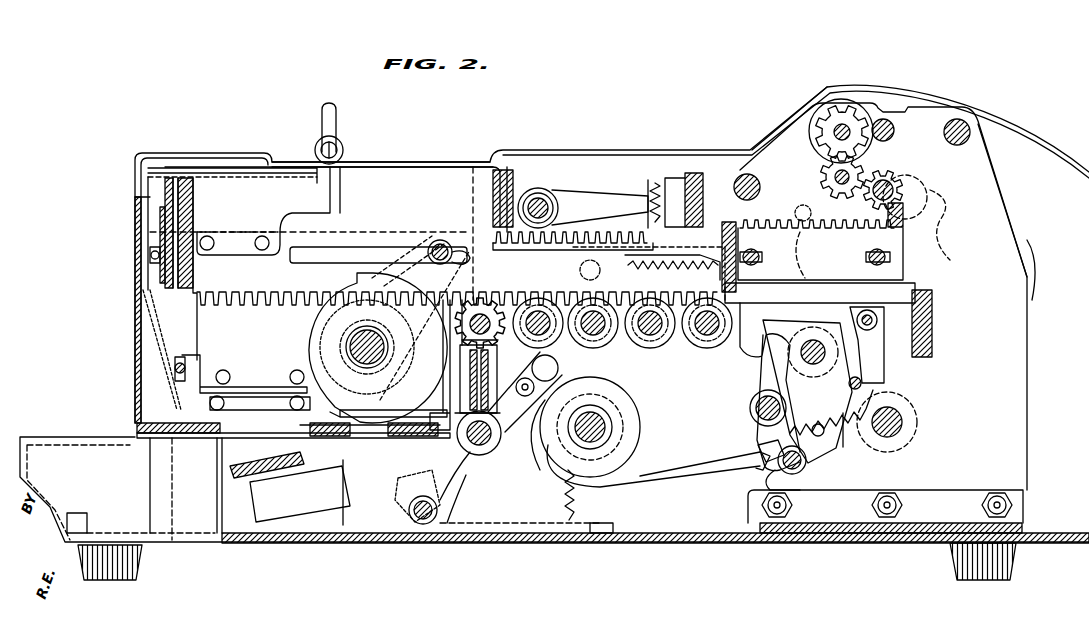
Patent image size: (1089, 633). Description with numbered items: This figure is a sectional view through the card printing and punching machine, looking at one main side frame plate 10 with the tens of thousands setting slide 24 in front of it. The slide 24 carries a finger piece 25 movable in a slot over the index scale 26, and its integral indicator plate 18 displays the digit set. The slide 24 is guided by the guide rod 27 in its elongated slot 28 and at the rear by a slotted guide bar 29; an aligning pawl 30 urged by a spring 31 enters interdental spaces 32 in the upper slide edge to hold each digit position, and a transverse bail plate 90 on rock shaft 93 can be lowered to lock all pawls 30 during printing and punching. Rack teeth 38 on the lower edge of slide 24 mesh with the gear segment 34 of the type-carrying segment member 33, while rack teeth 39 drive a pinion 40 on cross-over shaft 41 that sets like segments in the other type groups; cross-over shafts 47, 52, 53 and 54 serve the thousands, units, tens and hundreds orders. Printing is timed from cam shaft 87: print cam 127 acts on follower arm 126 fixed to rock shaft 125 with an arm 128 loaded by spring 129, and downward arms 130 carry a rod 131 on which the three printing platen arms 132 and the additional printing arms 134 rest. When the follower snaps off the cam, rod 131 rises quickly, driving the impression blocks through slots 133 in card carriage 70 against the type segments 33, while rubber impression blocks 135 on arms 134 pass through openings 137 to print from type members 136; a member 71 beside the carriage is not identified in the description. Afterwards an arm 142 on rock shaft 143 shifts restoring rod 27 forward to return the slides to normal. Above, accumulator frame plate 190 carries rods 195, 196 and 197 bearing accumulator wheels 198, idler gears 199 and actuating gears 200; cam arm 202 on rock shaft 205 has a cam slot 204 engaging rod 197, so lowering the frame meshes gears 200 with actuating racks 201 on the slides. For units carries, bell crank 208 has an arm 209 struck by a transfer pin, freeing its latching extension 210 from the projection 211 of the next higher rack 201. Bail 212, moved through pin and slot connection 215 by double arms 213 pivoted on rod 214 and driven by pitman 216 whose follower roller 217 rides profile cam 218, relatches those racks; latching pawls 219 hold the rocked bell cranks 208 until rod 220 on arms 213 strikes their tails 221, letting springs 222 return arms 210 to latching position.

The main side frame plate 10 is at (328, 298).
The indicator plate 18 is at (155, 175).
The manually settable slide 24 is at (268, 222).
The finger piece 25 is at (338, 116).
The index scale 26 is at (420, 164).
The guide rod 27 is at (446, 244).
The elongated slot 28 is at (355, 245).
The slotted guide bar 29 is at (934, 330).
The aligning pawl 30 is at (577, 203).
The spring 31 is at (670, 178).
The interdental spaces 32 is at (565, 241).
The segment member 33 is at (356, 281).
The gear segment 34 is at (317, 340).
The rack teeth 38 is at (262, 305).
The rack teeth 39 is at (470, 300).
The pinion 40 is at (460, 340).
The cross-over shaft 41 is at (494, 338).
The cross-over shaft 47 is at (710, 335).
The cross-over shaft 52 is at (655, 334).
The cross-over shaft 53 is at (548, 330).
The cross-over shaft 54 is at (602, 331).
The card carriage 70 is at (196, 437).
The base support 71 is at (135, 428).
The cam shaft 87 is at (606, 427).
The bail plate 90 is at (650, 182).
The rock shaft 93 is at (538, 196).
The rock shaft 125 is at (478, 456).
The follower arm 126 is at (532, 368).
The print cam 127 is at (640, 412).
The arm 128 is at (590, 420).
The spring 129 is at (567, 512).
The extending arms 130 is at (450, 528).
The rod 131 is at (418, 520).
The printing platen arms 132 is at (400, 490).
The slots 133 is at (372, 412).
The additional printing arms 134 is at (315, 492).
The rubber impression blocks 135 is at (262, 462).
The type members 136 is at (262, 395).
The additional openings 137 is at (230, 440).
The arm 142 is at (405, 250).
The rock shaft 143 is at (380, 338).
The frame plate 190 is at (765, 160).
The rod 195 is at (835, 125).
The rod 196 is at (822, 172).
The rod 197 is at (900, 180).
The accumulator wheels 198 is at (848, 112).
The idler gears 199 is at (822, 181).
The actuating gears 200 is at (920, 187).
The actuating racks 201 is at (820, 250).
The cam arm 202 is at (1010, 240).
The cam slot 204 is at (948, 202).
The rock shaft 205 is at (898, 432).
The bell crank 208 is at (880, 355).
The arm 209 is at (840, 293).
The latching extension 210 is at (780, 325).
The projection 211 is at (735, 278).
The bail 212 is at (770, 222).
The double arm 213 is at (815, 255).
The rod 214 is at (824, 357).
The pin and slot connection 215 is at (812, 213).
The pitman 216 is at (738, 478).
The follower roller 217 is at (520, 452).
The profile cam 218 is at (612, 475).
The latching pawls 219 is at (760, 377).
The rod 220 is at (806, 470).
The tails 221 is at (770, 462).
The springs 222 is at (846, 447).